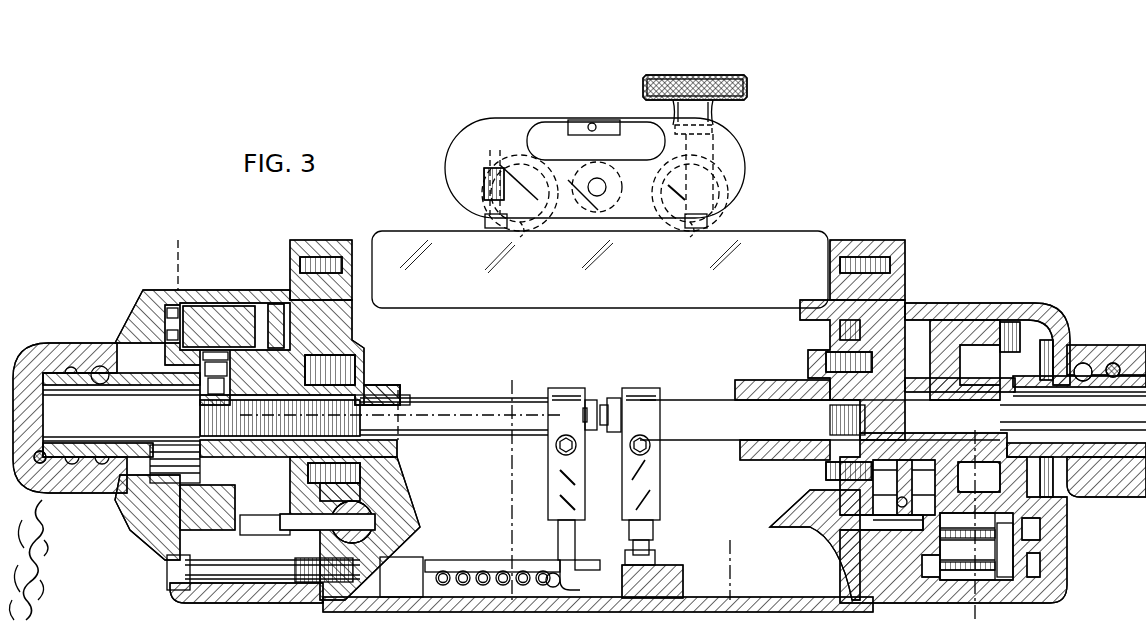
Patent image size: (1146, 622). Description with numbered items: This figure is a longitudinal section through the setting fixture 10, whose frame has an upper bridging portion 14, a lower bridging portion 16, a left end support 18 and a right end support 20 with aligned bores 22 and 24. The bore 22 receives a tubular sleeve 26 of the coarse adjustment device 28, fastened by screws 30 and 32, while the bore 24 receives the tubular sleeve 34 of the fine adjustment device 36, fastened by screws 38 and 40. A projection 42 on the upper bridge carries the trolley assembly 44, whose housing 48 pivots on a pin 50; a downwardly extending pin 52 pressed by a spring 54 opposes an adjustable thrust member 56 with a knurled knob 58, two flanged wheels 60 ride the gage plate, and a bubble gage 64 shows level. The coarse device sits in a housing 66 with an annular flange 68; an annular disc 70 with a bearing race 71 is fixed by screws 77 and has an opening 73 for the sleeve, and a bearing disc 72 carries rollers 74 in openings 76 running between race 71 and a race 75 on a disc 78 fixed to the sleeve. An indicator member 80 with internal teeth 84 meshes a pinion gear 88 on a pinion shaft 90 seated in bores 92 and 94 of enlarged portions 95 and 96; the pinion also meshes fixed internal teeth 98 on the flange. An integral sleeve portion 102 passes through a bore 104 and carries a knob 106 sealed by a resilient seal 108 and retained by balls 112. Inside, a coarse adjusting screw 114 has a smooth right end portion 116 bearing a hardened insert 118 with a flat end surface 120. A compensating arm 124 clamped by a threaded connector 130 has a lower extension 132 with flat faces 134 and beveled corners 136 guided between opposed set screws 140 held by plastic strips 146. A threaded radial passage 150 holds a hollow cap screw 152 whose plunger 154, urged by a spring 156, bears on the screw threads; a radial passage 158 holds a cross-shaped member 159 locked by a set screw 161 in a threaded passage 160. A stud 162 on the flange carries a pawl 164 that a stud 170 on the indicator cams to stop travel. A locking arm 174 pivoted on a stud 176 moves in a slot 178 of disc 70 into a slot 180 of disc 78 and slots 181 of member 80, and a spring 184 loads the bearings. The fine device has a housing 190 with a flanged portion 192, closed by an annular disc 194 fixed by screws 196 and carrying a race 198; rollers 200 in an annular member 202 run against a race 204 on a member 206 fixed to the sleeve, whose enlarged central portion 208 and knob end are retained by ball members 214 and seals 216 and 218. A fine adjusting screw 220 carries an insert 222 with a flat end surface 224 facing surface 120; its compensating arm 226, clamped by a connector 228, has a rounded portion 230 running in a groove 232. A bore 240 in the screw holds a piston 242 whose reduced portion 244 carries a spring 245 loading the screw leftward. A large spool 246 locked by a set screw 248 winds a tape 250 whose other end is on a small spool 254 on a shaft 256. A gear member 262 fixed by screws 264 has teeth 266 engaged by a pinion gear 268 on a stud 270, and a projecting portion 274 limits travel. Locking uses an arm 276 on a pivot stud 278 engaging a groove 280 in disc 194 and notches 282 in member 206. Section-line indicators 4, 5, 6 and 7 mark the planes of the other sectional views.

The setting fixture 10 is at (967, 296).
The upper bridging portion 14 is at (372, 286).
The lower bridging portion 16 is at (521, 602).
The left end support 18 is at (365, 345).
The right end support 20 is at (830, 335).
The bore 22 is at (375, 385).
The bore 24 is at (828, 380).
The tubular sleeve 26 is at (400, 392).
The coarse adjustment device 28 is at (195, 276).
The screw 30 is at (290, 262).
The screw 32 is at (167, 573).
The tubular sleeve 34 is at (740, 380).
The fine adjustment device 36 is at (1023, 280).
The screw 38 is at (905, 255).
The screw 40 is at (1040, 590).
The upwardly extending projection 42 is at (570, 180).
The trolley assembly 44 is at (745, 150).
The housing 48 is at (720, 205).
The pin 50 is at (618, 180).
The downwardly extending pin 52 is at (485, 220).
The spring 54 is at (520, 190).
The adjustable thrust member 56 is at (720, 165).
The knurled knob 58 is at (748, 92).
The flanged wheels 60 is at (662, 233).
The bubble gage 64 is at (594, 118).
The housing 66 is at (170, 308).
The annular flange 68 is at (135, 343).
The annular disc 70 is at (320, 318).
The annular bearing race 71 is at (334, 317).
The annular bearing disc 72 is at (273, 326).
The opening 73 is at (332, 415).
The bearing rollers 74 is at (352, 338).
The race 75 is at (280, 300).
The openings 76 is at (340, 492).
The screws 77 is at (356, 365).
The annular bearing disc 78 is at (245, 305).
The coarse setting indicator member 80 is at (219, 326).
The internal gear teeth 84 is at (150, 520).
The pinion gear 88 is at (190, 461).
The pinion shaft 90 is at (135, 470).
The bore 92 is at (160, 450).
The bore 94 is at (298, 450).
The enlarged portion 95 is at (150, 495).
The enlarged portion 96 is at (207, 507).
The internal teeth 98 is at (150, 510).
The sleeve portion 102 is at (65, 343).
The bore 104 is at (105, 338).
The knob 106 is at (75, 343).
The annular resilient seal 108 is at (121, 415).
The balls 112 is at (100, 384).
The coarse adjusting screw 114 is at (280, 418).
The right end portion 116 is at (437, 428).
The hardened insert 118 is at (595, 400).
The flat end surface 120 is at (605, 427).
The compensating arm 124 is at (548, 490).
The threaded connector 130 is at (556, 445).
The lower extension 132 is at (558, 533).
The flat front and rear faces 134 is at (597, 554).
The beveled corners 136 is at (579, 575).
The set screws 140 is at (500, 570).
The plastic strip 146 is at (401, 577).
The threaded radial passage 150 is at (232, 364).
The hollow cap screw 152 is at (229, 348).
The plunger 154 is at (210, 395).
The spring 156 is at (232, 381).
The radial passage 158 is at (161, 388).
The cross-shaped member 159 is at (138, 325).
The threaded passage 160 is at (165, 370).
The set screw 161 is at (130, 385).
The stud 162 is at (168, 330).
The pawl 164 is at (178, 300).
The stud 170 is at (160, 540).
The locking arm 174 is at (375, 522).
The stud 176 is at (380, 492).
The slot 178 is at (324, 564).
The slot 180 is at (272, 558).
The slots 181 is at (256, 534).
The spring 184 is at (130, 448).
The housing 190 is at (1030, 303).
The flanged portion 192 is at (1075, 345).
The annular disc 194 is at (830, 295).
The screws 196 is at (826, 362).
The annular bearing race 198 is at (835, 325).
The bearing rollers 200 is at (843, 410).
The annular member 202 is at (835, 342).
The annular race 204 is at (930, 305).
The annular member 206 is at (915, 330).
The enlarged central portion 208 is at (1080, 512).
The ball members 214 is at (1088, 362).
The annular seal 216 is at (1116, 362).
The annular seal 218 is at (1135, 390).
The fine adjusting screw 220 is at (820, 420).
The hardened insert 222 is at (610, 412).
The flat end surface 224 is at (620, 400).
The compensating arm 226 is at (660, 494).
The threaded connector 228 is at (650, 447).
The rounded portion 230 is at (650, 545).
The groove 232 is at (672, 558).
The bore 240 is at (900, 432).
The piston 242 is at (1073, 417).
The reduced diameter portion 244 is at (960, 379).
The spring 245 is at (810, 440).
The large annular spool 246 is at (985, 320).
The set screw 248 is at (1015, 320).
The tape 250 is at (982, 351).
The small spool 254 is at (1015, 580).
The shaft 256 is at (950, 590).
The gear member 262 is at (1076, 441).
The screws 264 is at (990, 470).
The teeth 266 is at (1050, 340).
The pinion gear 268 is at (1045, 560).
The stud 270 is at (1045, 528).
The projecting portion 274 is at (1133, 516).
The locking arm 276 is at (815, 545).
The pivot stud 278 is at (820, 545).
The groove 280 is at (893, 585).
The notches 282 is at (976, 545).
The section line 4 is at (178, 290).
The section line 5 is at (968, 320).
The section line 6 is at (512, 390).
The section line 7 is at (205, 530).